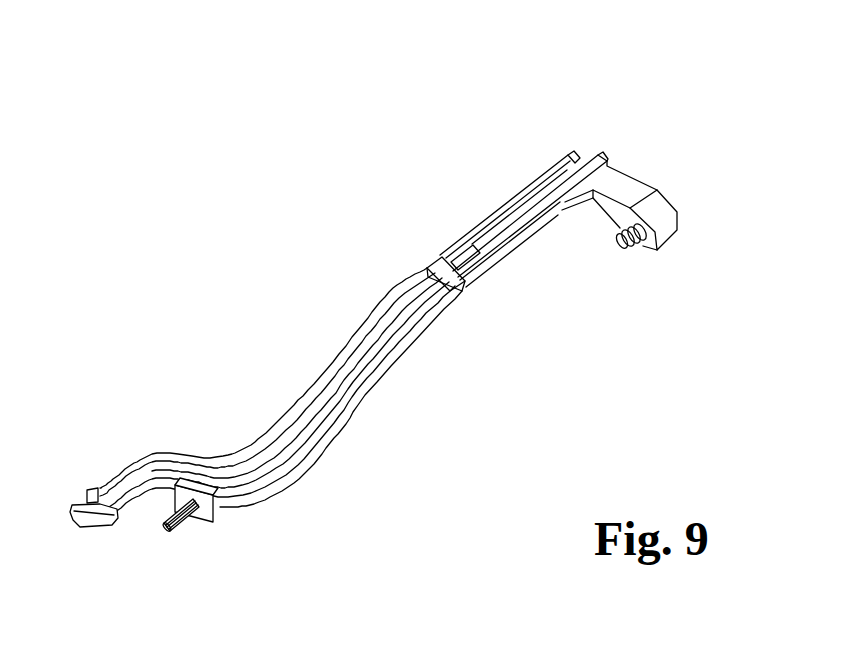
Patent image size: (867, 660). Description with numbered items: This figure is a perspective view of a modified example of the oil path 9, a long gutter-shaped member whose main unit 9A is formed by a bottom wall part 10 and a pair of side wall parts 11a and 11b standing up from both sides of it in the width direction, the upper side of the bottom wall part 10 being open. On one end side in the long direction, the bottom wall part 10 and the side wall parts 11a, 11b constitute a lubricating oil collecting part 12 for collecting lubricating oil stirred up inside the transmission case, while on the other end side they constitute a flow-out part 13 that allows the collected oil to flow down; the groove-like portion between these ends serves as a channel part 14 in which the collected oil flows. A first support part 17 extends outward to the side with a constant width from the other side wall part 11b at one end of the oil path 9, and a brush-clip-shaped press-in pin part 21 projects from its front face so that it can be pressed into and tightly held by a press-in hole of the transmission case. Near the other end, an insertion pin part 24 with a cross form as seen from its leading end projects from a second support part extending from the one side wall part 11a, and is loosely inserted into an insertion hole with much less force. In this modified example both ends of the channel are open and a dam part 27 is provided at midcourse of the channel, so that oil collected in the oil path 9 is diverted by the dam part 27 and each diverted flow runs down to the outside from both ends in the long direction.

The oil path 9 is at (397, 319).
The main unit 9A is at (491, 208).
The bottom wall part 10 is at (294, 463).
The one side wall part 11a is at (286, 485).
The other side wall part 11b is at (250, 444).
The lubricating oil collecting part 12 is at (546, 164).
The flow-out part 13 is at (80, 520).
The channel part 14 is at (298, 440).
The first support part 17 is at (675, 197).
The press-in pin part 21 is at (621, 250).
The insertion pin part 24 is at (178, 526).
The dam part 27 is at (442, 284).